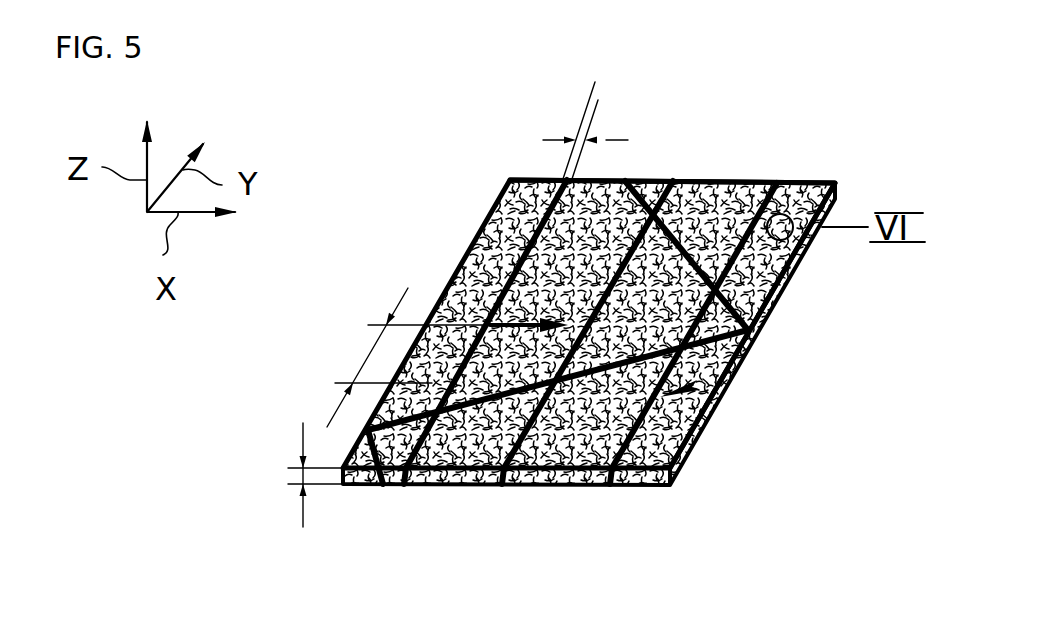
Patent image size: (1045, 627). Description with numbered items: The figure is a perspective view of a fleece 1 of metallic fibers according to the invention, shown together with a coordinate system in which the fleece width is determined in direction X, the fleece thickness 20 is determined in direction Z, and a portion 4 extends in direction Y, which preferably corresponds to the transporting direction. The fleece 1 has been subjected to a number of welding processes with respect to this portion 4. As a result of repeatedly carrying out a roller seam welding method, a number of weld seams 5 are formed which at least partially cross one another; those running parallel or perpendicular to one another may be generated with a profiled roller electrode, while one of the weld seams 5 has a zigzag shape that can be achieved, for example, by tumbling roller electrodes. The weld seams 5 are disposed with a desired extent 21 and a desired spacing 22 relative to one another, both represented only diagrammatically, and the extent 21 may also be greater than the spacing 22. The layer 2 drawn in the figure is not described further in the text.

The fleece 1 is at (790, 283).
The fiber layer 2 is at (728, 181).
The portion 4 is at (357, 370).
The weld seams 5 is at (722, 378).
The fleece thickness 20 is at (300, 470).
The extent 21 is at (588, 140).
The spacing 22 is at (540, 324).